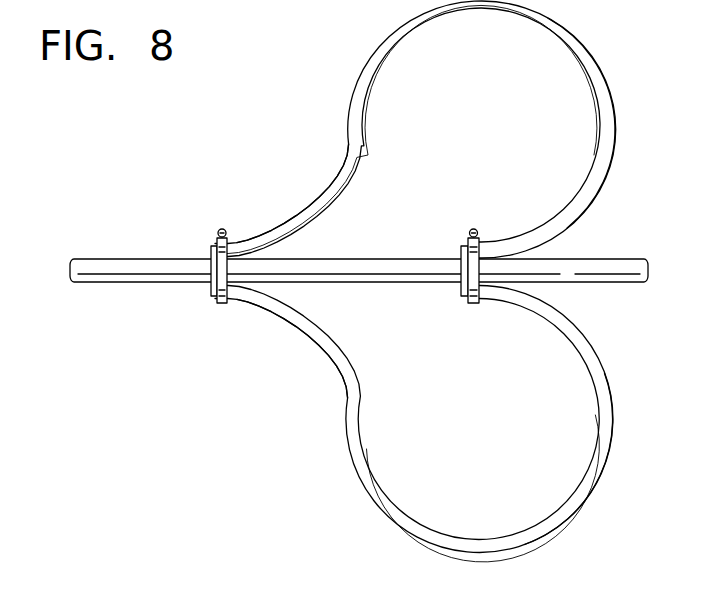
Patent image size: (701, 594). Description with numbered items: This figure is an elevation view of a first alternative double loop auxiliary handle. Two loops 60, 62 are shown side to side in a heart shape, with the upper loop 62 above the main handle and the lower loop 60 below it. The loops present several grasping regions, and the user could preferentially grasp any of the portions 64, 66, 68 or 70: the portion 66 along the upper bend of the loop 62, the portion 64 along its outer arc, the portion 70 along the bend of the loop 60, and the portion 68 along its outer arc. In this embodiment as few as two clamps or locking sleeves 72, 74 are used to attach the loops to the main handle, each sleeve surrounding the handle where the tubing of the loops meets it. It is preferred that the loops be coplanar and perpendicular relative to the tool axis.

The loop 60 is at (488, 417).
The loop 62 is at (492, 104).
The portion 64 is at (612, 132).
The portion 66 is at (361, 62).
The portion 68 is at (611, 437).
The portion 70 is at (346, 438).
The clamp or locking sleeve 72 is at (468, 232).
The clamp or locking sleeve 74 is at (216, 240).